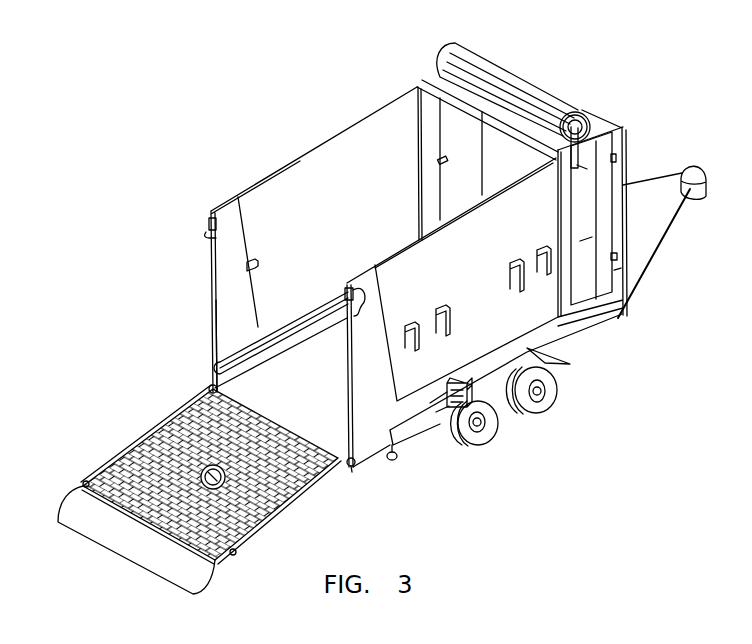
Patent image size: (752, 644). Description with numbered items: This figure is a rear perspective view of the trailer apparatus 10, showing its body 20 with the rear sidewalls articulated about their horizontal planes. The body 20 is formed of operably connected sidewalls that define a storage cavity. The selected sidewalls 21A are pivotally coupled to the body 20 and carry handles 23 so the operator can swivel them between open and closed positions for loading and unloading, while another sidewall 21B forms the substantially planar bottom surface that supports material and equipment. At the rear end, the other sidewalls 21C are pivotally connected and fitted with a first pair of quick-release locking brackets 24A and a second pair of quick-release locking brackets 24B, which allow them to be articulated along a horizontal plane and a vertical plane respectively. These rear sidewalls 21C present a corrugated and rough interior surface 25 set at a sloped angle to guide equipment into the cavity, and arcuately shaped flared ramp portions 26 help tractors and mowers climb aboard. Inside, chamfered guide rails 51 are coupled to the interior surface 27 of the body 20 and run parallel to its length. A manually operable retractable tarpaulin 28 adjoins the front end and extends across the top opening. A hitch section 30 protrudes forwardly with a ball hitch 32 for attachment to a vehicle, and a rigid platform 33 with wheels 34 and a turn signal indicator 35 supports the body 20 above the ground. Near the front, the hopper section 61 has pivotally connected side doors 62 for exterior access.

The apparatus 10 is at (145, 108).
The body 20 is at (320, 130).
The selected sidewalls 21A is at (270, 185).
The another sidewall 21B is at (364, 404).
The other sidewalls 21C is at (128, 445).
The handles 23 is at (440, 308).
The first pair of quick-release locking brackets 24A is at (210, 226).
The second pair of quick-release locking brackets 24B is at (210, 385).
The corrugated and rough interior surface 25 is at (167, 455).
The flared ramp portions 26 is at (137, 529).
The interior surface 27 is at (235, 345).
The retractable tarpaulin 28 is at (513, 87).
The hitch section 30 is at (650, 173).
The ball hitch 32 is at (689, 165).
The rigid platform 33 is at (592, 328).
The wheels 34 is at (492, 418).
The turn signal indicator 35 is at (462, 415).
The chamfered guide rails 51 is at (277, 340).
The hopper section 61 is at (623, 127).
The side doors 62 is at (600, 240).